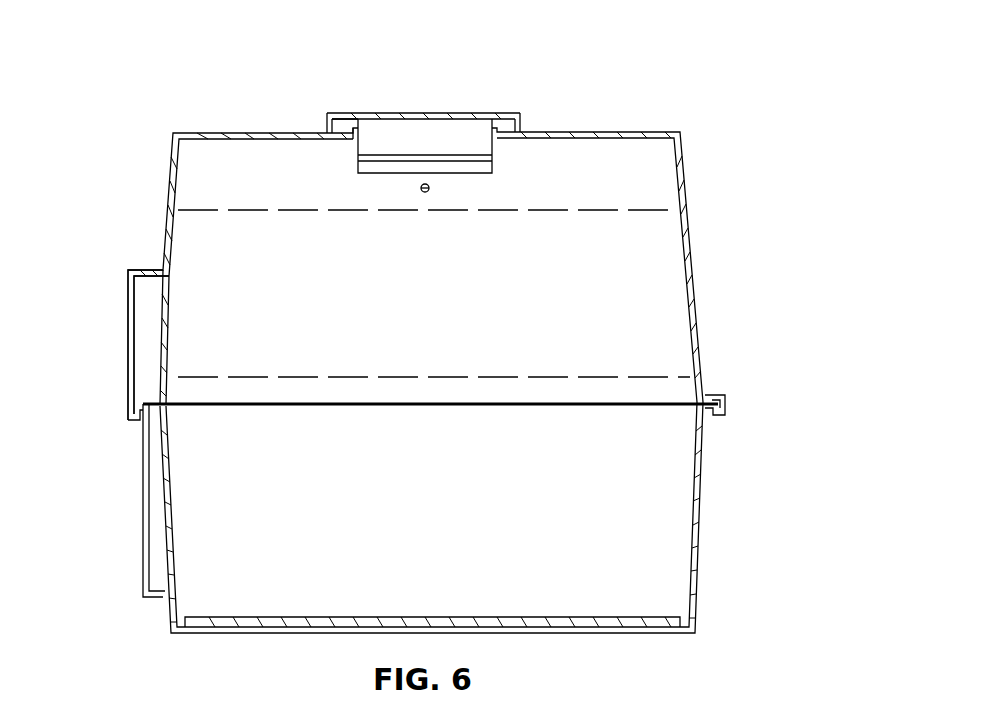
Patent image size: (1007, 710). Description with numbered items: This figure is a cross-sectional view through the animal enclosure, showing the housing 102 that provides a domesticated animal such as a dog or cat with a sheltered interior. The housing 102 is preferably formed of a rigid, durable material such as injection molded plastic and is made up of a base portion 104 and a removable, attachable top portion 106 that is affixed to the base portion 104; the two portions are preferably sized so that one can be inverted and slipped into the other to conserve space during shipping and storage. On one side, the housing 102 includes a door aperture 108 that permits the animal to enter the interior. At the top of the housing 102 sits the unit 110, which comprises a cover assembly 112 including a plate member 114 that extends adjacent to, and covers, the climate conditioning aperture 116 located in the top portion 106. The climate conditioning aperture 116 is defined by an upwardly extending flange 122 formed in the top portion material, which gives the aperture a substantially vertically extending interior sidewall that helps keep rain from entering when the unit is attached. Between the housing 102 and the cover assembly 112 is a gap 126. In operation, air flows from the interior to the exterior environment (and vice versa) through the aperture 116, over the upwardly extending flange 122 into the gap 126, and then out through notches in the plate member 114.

The housing 102 is at (168, 131).
The base portion 104 is at (703, 510).
The top portion 106 is at (697, 277).
The door aperture 108 is at (95, 411).
The unit 110 is at (336, 70).
The cover assembly 112 is at (415, 105).
The plate member 114 is at (338, 110).
The climate conditioning aperture 116 is at (397, 181).
The upwardly extending flange 122 is at (520, 115).
The gap 126 is at (368, 123).